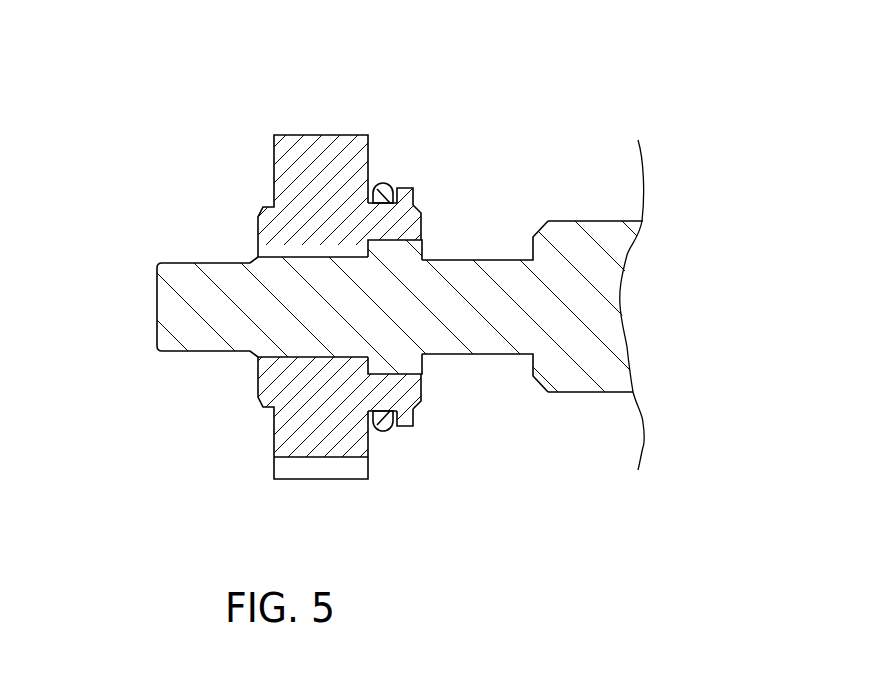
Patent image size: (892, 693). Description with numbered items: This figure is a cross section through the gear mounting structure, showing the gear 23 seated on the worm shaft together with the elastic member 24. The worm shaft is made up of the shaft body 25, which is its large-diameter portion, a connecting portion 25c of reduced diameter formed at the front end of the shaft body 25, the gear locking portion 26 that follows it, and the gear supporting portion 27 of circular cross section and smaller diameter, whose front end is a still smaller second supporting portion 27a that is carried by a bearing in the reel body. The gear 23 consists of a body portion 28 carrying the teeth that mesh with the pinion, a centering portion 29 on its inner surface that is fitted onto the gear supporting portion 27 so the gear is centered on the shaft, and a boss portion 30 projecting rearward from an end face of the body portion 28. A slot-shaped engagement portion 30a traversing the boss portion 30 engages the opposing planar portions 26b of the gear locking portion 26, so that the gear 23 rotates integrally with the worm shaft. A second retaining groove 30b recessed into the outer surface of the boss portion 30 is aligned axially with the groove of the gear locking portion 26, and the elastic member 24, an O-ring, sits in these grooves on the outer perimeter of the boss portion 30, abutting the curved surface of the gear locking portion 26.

The gear 23 is at (262, 126).
The elastic member 24 is at (384, 432).
The shaft body 25 is at (583, 335).
The connecting portion 25c is at (488, 300).
The gear locking portion 26 is at (418, 406).
The planar portions 26b is at (423, 211).
The gear supporting portion 27 is at (302, 310).
The second supporting portion 27a is at (175, 282).
The body portion 28 is at (338, 150).
The centering portion 29 is at (307, 262).
The boss portion 30 is at (393, 203).
The engagement portion 30a is at (393, 243).
The second retaining groove 30b is at (396, 422).